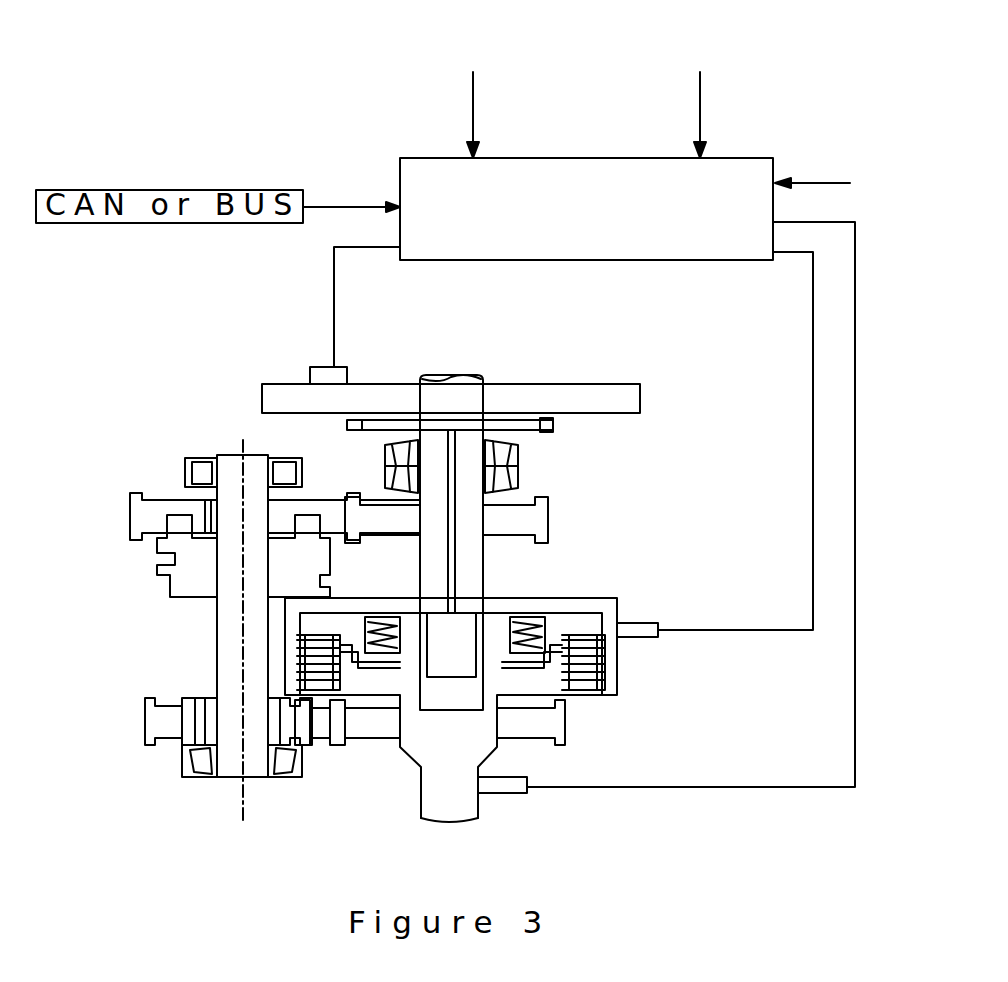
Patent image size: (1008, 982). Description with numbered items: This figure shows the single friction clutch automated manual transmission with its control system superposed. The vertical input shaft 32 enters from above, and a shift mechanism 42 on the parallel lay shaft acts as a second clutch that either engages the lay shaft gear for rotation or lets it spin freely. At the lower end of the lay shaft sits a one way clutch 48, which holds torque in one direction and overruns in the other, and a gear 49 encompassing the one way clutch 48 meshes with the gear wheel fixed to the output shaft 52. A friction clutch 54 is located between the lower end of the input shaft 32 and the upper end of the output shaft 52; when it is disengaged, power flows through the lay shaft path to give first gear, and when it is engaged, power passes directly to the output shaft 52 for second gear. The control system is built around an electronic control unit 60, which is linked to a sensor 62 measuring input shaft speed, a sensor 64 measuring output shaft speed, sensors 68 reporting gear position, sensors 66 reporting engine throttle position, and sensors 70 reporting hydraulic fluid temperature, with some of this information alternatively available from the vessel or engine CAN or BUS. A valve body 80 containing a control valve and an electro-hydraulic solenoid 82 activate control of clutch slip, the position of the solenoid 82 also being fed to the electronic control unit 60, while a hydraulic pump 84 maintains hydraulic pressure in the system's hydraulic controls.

The input shaft 32 is at (467, 364).
The shift mechanism 42 is at (146, 550).
The one way clutch 48 is at (180, 750).
The gear 49 is at (138, 690).
The output shaft 52 is at (442, 795).
The friction clutch 54 is at (618, 668).
The electronic control unit 60 is at (586, 209).
The sensor 62 is at (640, 618).
The sensor 64 is at (505, 802).
The sensors 66 is at (700, 72).
The sensors 68 is at (473, 72).
The sensors 70 is at (838, 184).
The valve body 80 is at (250, 394).
The electro-hydraulic solenoid 82 is at (318, 356).
The hydraulic pump 84 is at (335, 428).